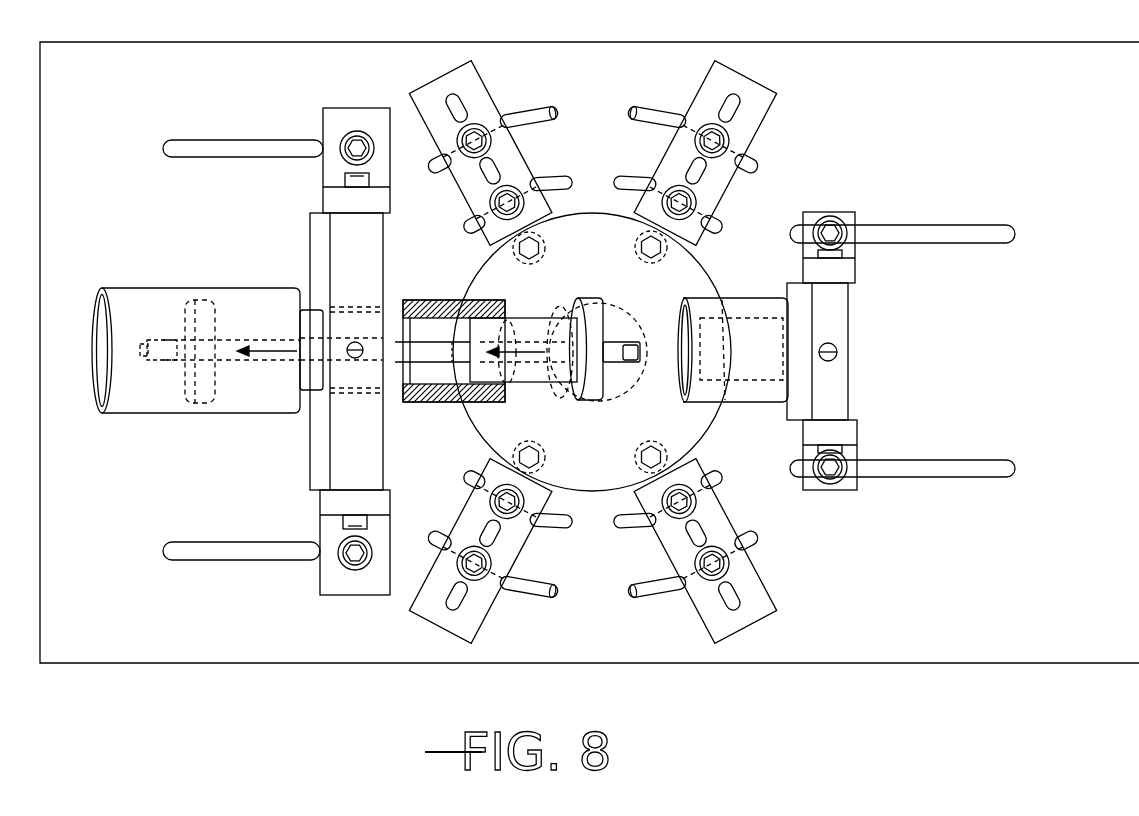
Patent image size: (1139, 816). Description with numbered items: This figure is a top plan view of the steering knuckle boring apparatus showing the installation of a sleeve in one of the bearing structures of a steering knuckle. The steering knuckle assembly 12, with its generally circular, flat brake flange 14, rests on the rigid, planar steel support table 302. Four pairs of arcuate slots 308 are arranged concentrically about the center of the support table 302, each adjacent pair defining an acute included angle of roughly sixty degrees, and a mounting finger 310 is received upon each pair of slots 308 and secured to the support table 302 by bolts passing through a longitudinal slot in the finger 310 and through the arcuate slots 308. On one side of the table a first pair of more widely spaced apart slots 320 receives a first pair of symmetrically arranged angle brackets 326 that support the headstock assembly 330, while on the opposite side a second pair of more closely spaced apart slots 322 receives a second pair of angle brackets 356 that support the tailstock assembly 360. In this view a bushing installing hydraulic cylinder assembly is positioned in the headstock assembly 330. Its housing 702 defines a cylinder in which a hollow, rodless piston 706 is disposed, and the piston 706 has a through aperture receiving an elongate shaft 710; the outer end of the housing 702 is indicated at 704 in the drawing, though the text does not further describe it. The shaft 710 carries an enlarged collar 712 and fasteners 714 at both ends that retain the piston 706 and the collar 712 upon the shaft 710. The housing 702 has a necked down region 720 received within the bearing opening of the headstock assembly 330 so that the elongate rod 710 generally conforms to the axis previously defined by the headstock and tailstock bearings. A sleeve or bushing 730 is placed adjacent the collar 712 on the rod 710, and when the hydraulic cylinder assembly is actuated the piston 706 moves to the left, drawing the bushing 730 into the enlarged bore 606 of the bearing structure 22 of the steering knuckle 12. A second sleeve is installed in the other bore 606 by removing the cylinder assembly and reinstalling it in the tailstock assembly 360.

The steering knuckle assembly 12 is at (745, 224).
The brake flange 14 is at (600, 472).
The bearing structure 22 is at (405, 297).
The support table 302 is at (948, 632).
The arcuate slots 308 is at (605, 185).
The mounting finger 310 is at (748, 98).
The first pair of slots 320 is at (212, 141).
The second pair of slots 322 is at (970, 228).
The first pair of angle brackets 326 is at (332, 122).
The headstock assembly 330 is at (255, 224).
The second pair of angle brackets 356 is at (850, 218).
The tailstock assembly 360 is at (884, 390).
The enlarged bores 606 is at (463, 387).
The housing 702 is at (140, 415).
The cylinder end cap 704 is at (100, 413).
The hollow piston 706 is at (208, 317).
The elongate shaft 710 is at (614, 388).
The enlarged collar 712 is at (578, 292).
The fasteners 714 is at (170, 343).
The necked down region 720 is at (311, 380).
The sleeve or bushing 730 is at (473, 276).